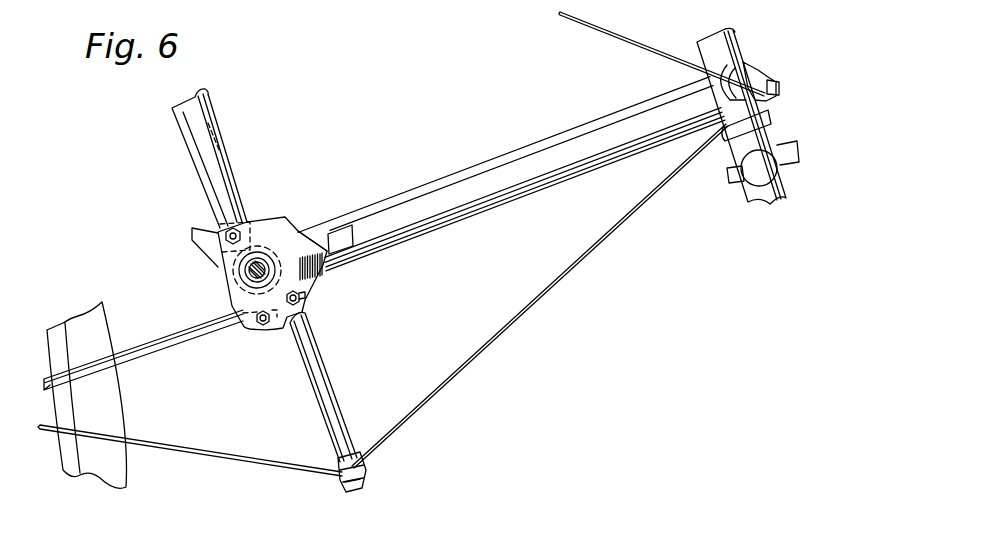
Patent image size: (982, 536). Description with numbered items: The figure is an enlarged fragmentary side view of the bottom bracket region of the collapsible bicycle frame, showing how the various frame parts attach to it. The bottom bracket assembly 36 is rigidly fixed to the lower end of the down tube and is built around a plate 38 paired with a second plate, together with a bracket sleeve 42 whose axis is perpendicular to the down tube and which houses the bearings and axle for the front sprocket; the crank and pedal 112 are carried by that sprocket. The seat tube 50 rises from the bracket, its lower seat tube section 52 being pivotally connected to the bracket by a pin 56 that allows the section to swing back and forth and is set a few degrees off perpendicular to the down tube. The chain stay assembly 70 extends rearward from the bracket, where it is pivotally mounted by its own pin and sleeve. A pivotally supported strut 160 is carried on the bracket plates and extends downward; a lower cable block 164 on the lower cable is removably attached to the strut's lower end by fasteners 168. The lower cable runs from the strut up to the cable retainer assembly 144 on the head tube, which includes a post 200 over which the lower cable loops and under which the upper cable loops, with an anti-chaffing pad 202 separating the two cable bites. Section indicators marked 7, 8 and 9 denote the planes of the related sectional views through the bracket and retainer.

The bottom bracket assembly 36 is at (275, 217).
The plate 38 is at (316, 246).
The bracket sleeve 42 is at (274, 251).
The seat tube 50 is at (214, 112).
The lower seat tube section 52 is at (208, 143).
The pin 56 is at (246, 219).
The chain stay assembly 70 is at (218, 337).
The crank and pedal 112 is at (190, 227).
The cable retainer assembly 144 is at (760, 62).
The strut 160 is at (330, 387).
The lower cable block 164 is at (358, 472).
The fasteners 168 is at (337, 485).
The post 200 is at (778, 83).
The anti-chaffing pad 202 is at (725, 137).
The section line 7- 7 is at (307, 195).
The section line 8- 8 is at (478, 448).
The section line 9- 9 is at (778, 33).